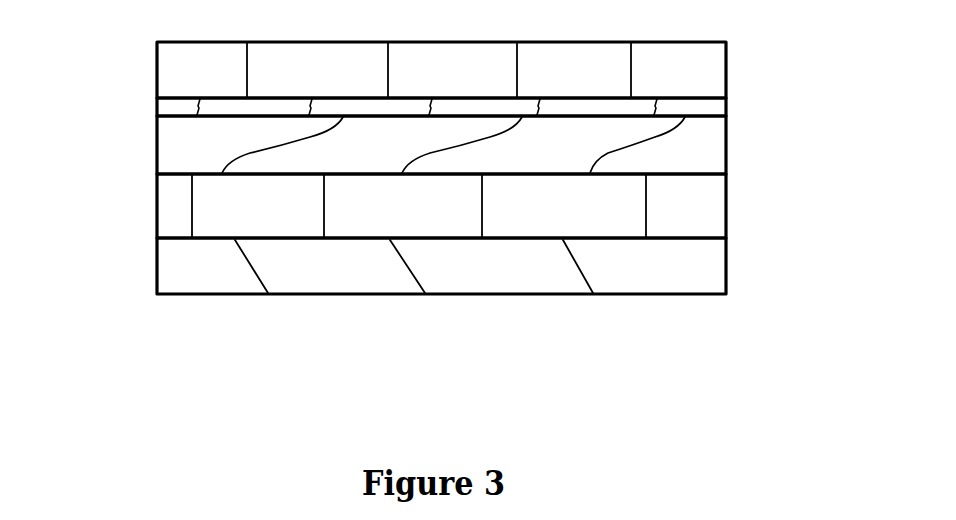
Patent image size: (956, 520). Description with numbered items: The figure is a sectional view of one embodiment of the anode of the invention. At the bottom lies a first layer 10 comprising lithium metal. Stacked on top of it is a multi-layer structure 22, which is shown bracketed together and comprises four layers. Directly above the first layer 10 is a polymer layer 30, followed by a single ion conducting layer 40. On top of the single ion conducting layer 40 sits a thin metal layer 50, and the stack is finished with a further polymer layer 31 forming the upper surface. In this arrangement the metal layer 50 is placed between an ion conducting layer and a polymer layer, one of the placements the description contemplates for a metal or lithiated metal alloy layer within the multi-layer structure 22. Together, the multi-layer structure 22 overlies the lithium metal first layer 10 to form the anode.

The multi-layer structure 22 is at (155, 43).
The polymer layer 31 is at (727, 67).
The metal layer 50 is at (727, 107).
The single ion conducting layer 40 is at (727, 152).
The polymer layer 30 is at (727, 212).
The first layer 10 is at (727, 272).